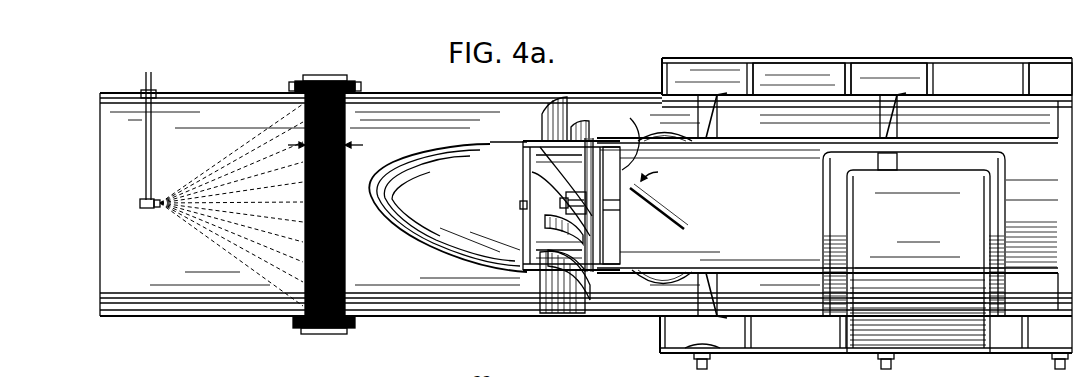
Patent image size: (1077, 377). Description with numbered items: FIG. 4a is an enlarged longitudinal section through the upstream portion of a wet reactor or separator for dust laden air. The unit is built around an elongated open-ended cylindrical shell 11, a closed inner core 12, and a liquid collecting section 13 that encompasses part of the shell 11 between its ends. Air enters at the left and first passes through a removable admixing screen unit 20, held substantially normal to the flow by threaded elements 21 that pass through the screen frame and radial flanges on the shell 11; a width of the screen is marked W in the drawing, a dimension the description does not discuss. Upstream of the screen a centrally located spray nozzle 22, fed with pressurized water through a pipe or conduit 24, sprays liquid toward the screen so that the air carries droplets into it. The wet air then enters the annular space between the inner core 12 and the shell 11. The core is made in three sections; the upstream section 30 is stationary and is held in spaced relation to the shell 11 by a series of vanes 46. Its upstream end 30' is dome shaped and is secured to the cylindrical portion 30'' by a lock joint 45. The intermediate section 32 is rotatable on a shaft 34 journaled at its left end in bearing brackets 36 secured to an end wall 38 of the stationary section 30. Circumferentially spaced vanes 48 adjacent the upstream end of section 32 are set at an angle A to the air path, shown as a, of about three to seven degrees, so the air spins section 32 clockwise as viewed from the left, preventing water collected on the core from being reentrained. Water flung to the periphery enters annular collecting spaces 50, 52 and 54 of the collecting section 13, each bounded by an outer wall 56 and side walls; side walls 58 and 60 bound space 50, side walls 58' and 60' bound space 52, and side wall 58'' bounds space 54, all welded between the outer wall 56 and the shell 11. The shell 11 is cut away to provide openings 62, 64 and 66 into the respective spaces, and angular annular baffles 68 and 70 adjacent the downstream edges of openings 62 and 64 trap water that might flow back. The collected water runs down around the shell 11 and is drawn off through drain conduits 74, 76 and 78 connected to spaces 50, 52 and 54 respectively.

The cylindrical shell 11 is at (196, 318).
The inner core 12 is at (526, 270).
The liquid collecting section 13 is at (896, 58).
The screen unit 20 is at (316, 76).
The threaded elements 21 is at (357, 83).
The spray nozzle 22 is at (145, 210).
The pipe or conduit 24 is at (152, 82).
The stationary core section 30 is at (448, 210).
The upstream end 30' is at (394, 212).
The cylindrical portion 30'' is at (494, 128).
The intermediate section 32 is at (792, 139).
The shaft 34 is at (617, 215).
The bearing brackets 36 is at (571, 195).
The end wall 38 is at (586, 155).
The lock joint 45 is at (519, 207).
The vanes 46 is at (577, 303).
The vanes 48 is at (690, 141).
The annular collecting space 50 is at (706, 58).
The annular collecting space 52 is at (870, 60).
The annular collecting space 54 is at (1050, 60).
The outer wall portion 56 is at (796, 58).
The side wall 58 is at (647, 66).
The side wall 58' is at (837, 66).
The side wall 58'' is at (1014, 66).
The side wall 60 is at (745, 63).
The side wall 60' is at (940, 64).
The opening 62 is at (698, 96).
The opening 64 is at (889, 96).
The opening 66 is at (1064, 96).
The annular baffle 68 is at (722, 92).
The annular baffle 70 is at (907, 92).
The drain conduit 74 is at (695, 362).
The drain conduit 76 is at (878, 362).
The drain conduit 78 is at (1054, 362).
The angle a is at (627, 135).
The angle A is at (656, 173).
The filter width W is at (334, 146).